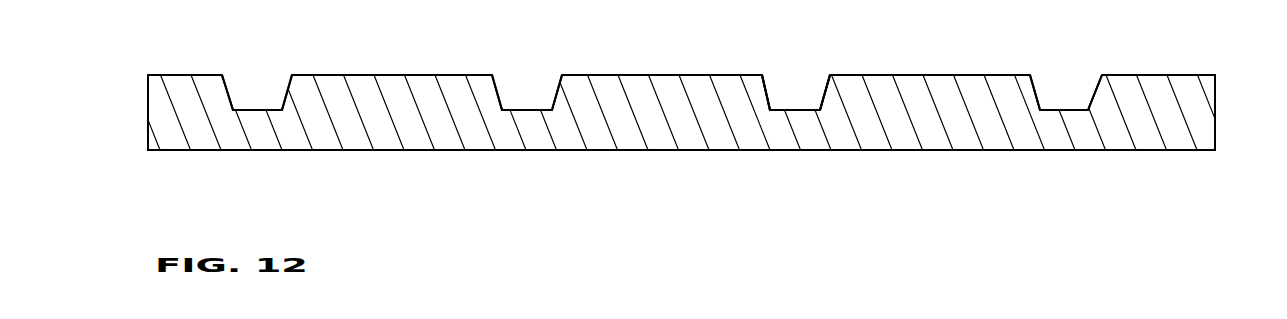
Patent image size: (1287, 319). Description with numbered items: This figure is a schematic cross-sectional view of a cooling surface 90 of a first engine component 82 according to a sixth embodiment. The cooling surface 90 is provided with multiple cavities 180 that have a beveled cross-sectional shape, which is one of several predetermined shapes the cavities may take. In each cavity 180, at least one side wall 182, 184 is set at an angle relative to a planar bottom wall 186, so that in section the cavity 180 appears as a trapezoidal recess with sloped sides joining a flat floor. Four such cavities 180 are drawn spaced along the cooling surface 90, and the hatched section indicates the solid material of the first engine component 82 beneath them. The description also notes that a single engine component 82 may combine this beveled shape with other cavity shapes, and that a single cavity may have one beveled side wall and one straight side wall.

The first engine component 82 is at (1210, 57).
The cooling surface 90 is at (182, 75).
The cavities 180 is at (261, 78).
The side wall 182 is at (767, 95).
The side wall 184 is at (824, 97).
The planar bottom wall 186 is at (787, 110).